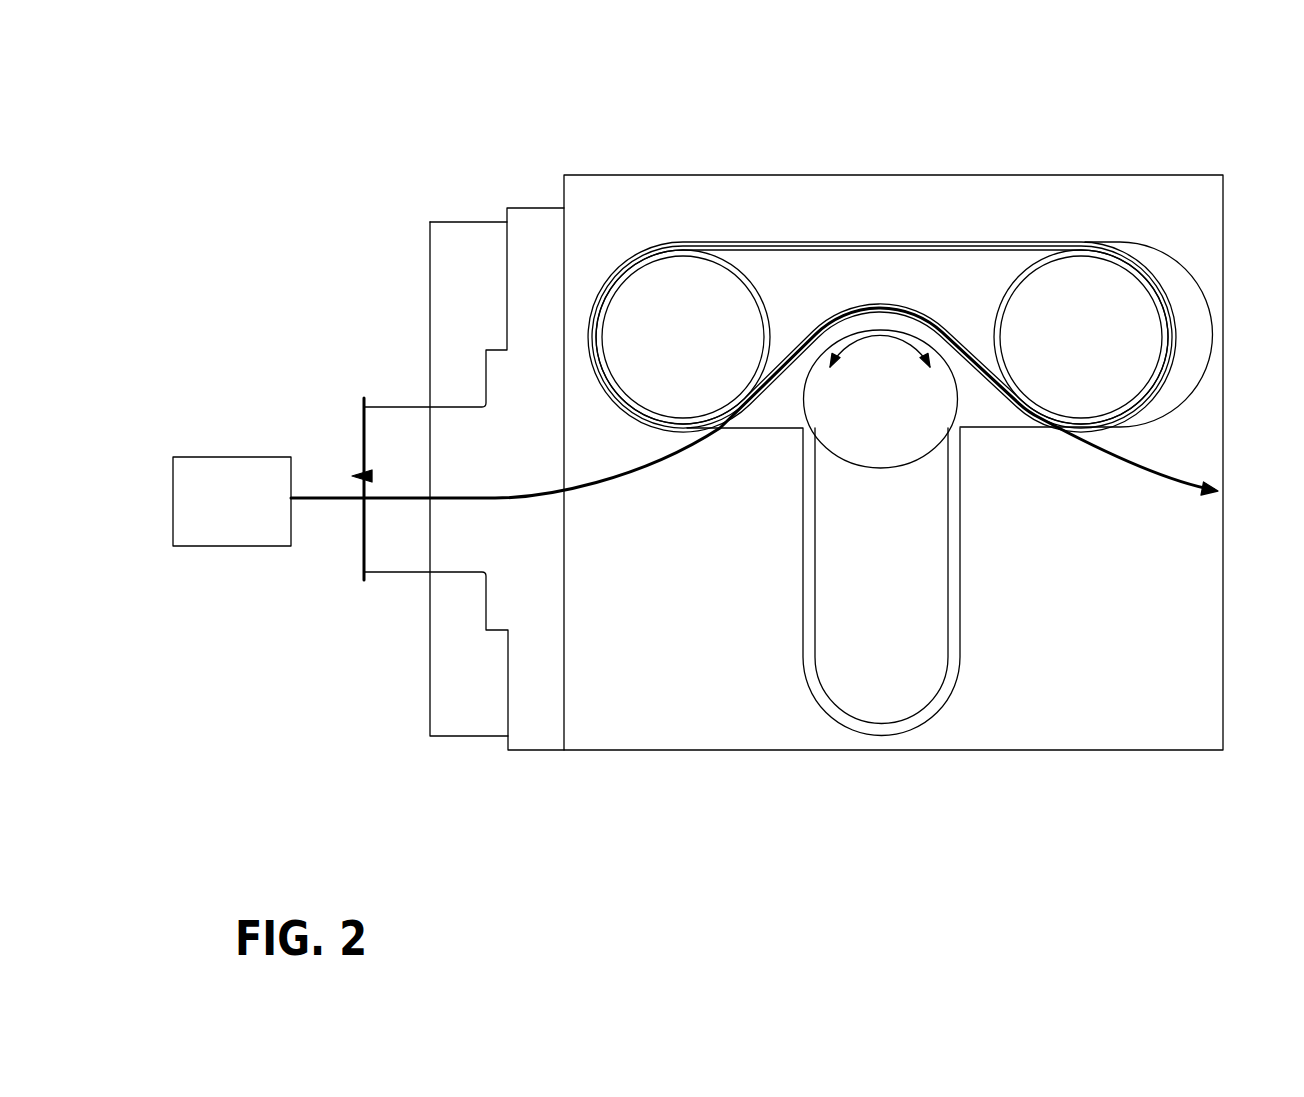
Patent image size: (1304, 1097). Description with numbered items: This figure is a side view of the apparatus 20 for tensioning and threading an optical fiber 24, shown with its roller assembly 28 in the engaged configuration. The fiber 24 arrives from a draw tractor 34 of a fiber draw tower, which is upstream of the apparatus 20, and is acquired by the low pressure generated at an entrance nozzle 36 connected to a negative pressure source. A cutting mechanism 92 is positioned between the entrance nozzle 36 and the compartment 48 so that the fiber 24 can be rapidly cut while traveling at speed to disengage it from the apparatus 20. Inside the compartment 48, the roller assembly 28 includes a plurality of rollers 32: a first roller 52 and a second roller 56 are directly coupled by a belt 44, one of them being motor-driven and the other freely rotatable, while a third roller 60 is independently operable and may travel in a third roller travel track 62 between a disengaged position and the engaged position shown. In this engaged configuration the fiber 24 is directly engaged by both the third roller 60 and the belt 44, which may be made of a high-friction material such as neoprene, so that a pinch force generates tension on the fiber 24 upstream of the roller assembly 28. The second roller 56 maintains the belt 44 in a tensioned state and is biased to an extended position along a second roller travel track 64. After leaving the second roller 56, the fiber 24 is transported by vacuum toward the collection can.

The apparatus 20 is at (482, 136).
The optical fiber 24 is at (327, 495).
The roller assembly 28 is at (784, 279).
The rollers 32 is at (637, 307).
The draw tractor 34 is at (257, 457).
The entrance nozzle 36 is at (385, 563).
The belt 44 is at (965, 342).
The compartment 48 is at (679, 757).
The first roller 52 is at (667, 282).
The second roller 56 is at (1117, 293).
The third roller 60 is at (848, 427).
The third roller travel track 62 is at (838, 660).
The second roller travel track 64 is at (1177, 315).
The cutting mechanism 92 is at (444, 238).